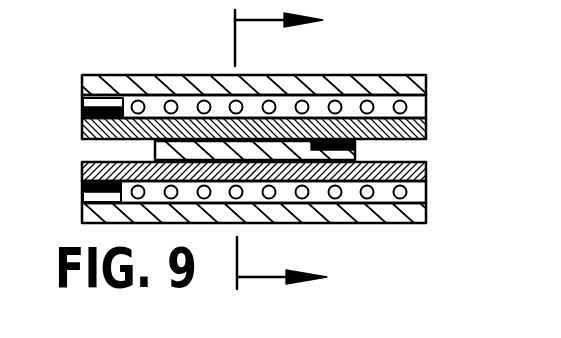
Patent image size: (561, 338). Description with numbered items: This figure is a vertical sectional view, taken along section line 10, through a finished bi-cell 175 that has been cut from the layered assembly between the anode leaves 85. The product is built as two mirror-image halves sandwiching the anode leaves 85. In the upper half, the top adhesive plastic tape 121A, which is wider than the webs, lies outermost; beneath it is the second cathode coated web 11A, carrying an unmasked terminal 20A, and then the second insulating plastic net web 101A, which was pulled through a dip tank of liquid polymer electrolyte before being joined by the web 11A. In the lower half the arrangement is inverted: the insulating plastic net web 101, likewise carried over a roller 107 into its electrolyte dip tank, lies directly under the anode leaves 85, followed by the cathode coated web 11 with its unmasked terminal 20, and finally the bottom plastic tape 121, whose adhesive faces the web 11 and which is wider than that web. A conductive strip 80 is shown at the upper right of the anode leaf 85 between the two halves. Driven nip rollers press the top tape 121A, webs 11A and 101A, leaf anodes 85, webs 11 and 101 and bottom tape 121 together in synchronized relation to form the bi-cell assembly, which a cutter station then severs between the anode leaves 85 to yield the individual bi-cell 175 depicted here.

The section line 10- 10 is at (297, 147).
The cathode coated web 11 is at (428, 189).
The second cathode coated web 11A is at (429, 102).
The unmasked terminals 20 is at (82, 189).
The conductive contact block (second) 20A is at (80, 110).
The conductive strip 80 is at (355, 143).
The anode leaves 85 is at (152, 153).
The net web of insulating plastic 101 is at (428, 170).
The second insulating plastic net web 101A is at (429, 122).
The bottom plastic tape 121 is at (330, 223).
The second adhesive plastic tape 121A is at (300, 82).
The bi-cell 175 is at (157, 57).
The roller 107 is at (36, 6).